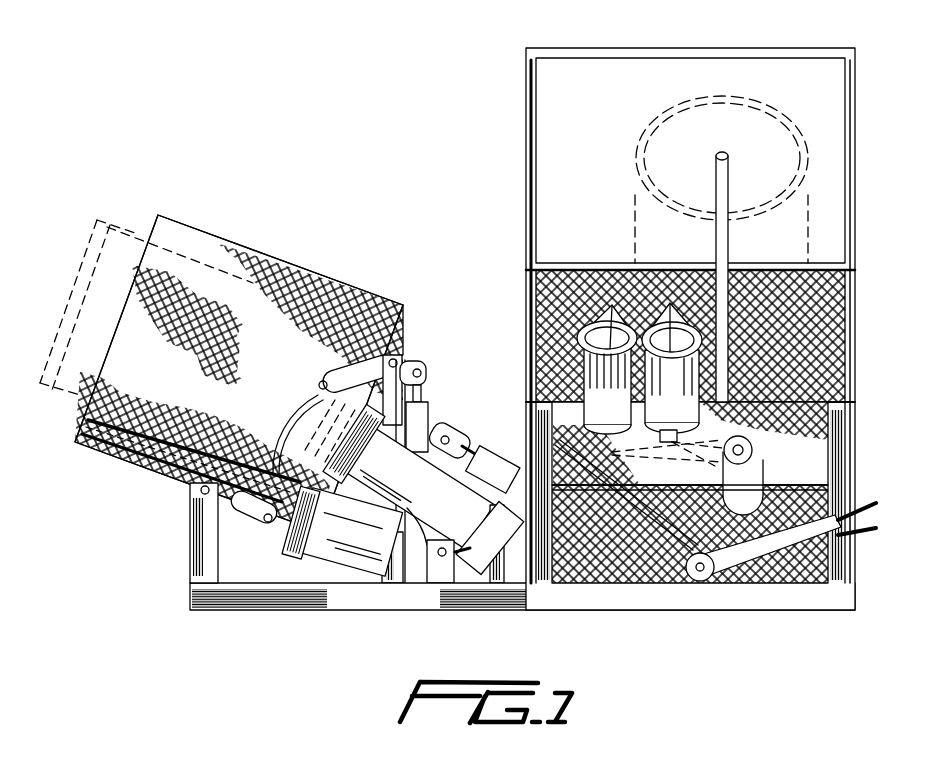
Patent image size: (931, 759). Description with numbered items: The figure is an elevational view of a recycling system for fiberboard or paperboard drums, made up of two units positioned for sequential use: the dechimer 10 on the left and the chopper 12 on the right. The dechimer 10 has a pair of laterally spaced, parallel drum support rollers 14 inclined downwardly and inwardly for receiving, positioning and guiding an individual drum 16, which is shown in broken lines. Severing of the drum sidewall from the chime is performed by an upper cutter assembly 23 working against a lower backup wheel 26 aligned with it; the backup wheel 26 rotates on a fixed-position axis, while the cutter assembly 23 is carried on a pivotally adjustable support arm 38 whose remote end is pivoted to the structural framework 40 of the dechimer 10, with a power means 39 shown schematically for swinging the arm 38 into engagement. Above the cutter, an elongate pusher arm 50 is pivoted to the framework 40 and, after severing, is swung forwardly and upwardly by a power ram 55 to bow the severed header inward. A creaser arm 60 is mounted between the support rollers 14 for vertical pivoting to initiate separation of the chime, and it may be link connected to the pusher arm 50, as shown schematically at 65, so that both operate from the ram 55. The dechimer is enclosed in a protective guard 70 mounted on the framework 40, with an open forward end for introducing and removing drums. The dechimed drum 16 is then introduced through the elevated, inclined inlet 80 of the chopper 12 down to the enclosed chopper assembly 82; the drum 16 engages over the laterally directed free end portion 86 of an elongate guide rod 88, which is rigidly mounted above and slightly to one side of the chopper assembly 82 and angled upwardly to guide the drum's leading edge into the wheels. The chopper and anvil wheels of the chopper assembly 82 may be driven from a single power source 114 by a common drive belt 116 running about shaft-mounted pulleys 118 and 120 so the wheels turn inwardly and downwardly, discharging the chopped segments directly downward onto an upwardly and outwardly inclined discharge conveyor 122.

The dechimer 10 is at (294, 240).
The chopper 12 is at (516, 206).
The drum support rollers 14 is at (190, 412).
The drum 16 is at (138, 232).
The upper cutter assembly 23 is at (333, 428).
The lower backup wheel 26 is at (286, 566).
The support arm 38 is at (408, 493).
The power means 39 is at (500, 447).
The structural framework 40 is at (190, 576).
The pusher arm 50 is at (393, 352).
The power ram 55 is at (430, 410).
The creaser arm 60 is at (254, 524).
The link connection 65 is at (360, 384).
The protective enclosure or guard 70 is at (305, 272).
The inlet 80 is at (552, 100).
The chopper assembly 82 is at (628, 305).
The free end portion of guide rod 86 is at (730, 160).
The guide rod 88 is at (712, 238).
The power source 114 is at (763, 478).
The drive belt 116 is at (718, 452).
The pulley 118 is at (614, 462).
The pulley 120 is at (658, 500).
The discharge conveyor 122 is at (745, 578).